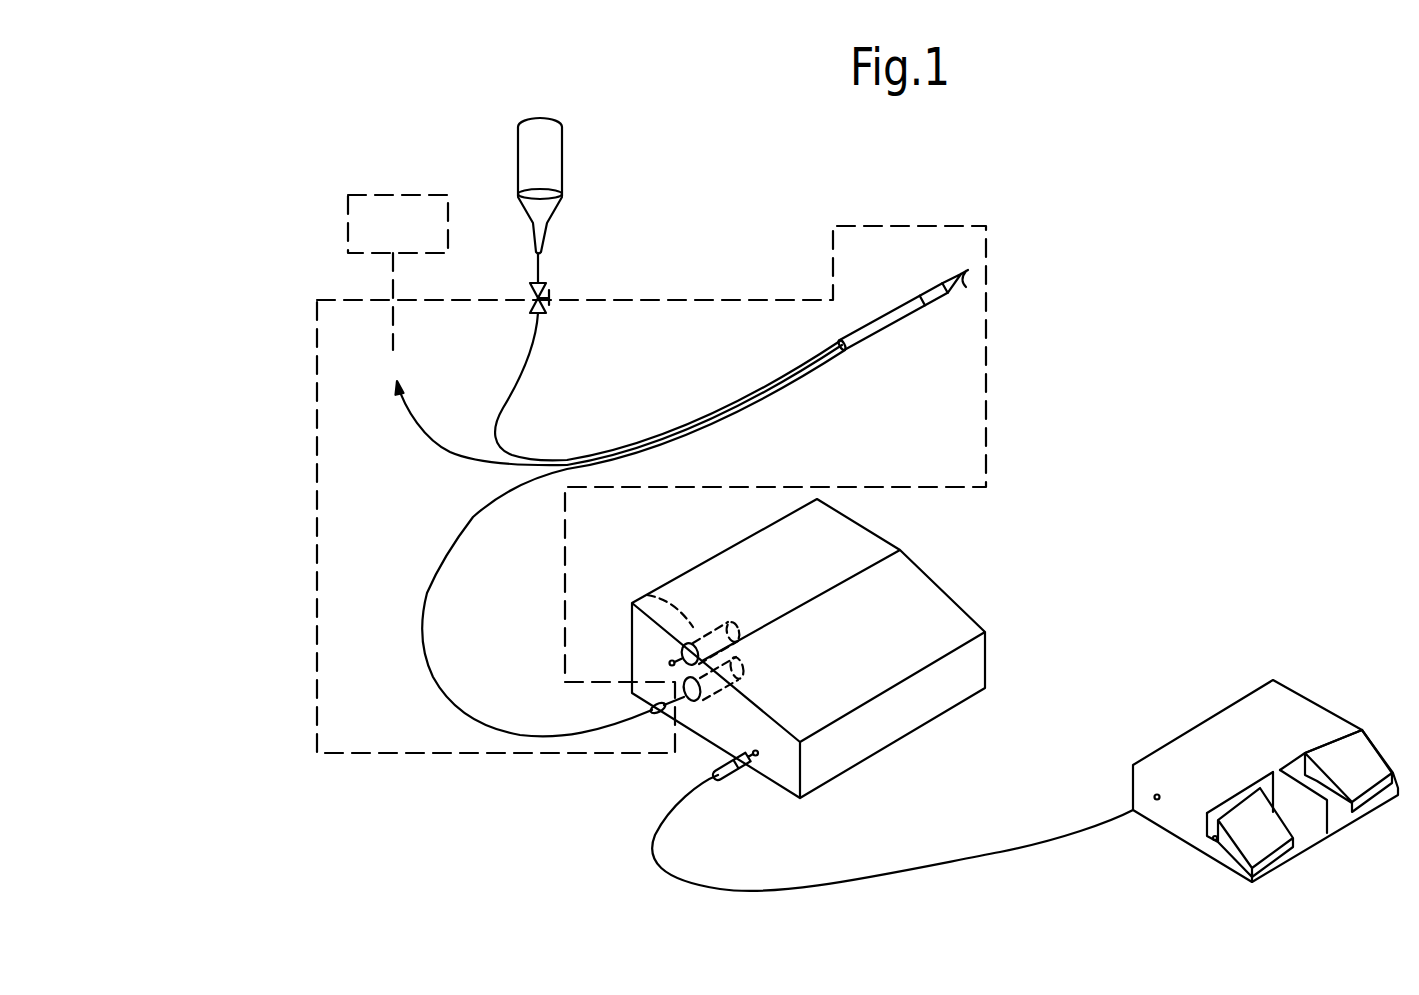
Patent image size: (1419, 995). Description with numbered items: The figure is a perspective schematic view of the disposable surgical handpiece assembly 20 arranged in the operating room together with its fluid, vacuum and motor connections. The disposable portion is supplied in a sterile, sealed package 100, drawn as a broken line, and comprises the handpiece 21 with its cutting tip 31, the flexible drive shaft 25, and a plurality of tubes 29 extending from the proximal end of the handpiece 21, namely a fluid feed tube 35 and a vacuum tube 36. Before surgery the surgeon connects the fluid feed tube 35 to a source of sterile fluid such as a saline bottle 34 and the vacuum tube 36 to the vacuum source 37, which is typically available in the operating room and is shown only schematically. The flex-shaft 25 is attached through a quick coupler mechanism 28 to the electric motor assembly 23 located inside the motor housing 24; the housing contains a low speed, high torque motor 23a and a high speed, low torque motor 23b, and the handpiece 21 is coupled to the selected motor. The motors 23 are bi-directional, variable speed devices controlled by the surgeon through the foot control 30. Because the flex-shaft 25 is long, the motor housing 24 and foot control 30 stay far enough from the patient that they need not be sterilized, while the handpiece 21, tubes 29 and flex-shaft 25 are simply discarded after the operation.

The sterile sealed package 100 is at (315, 555).
The vacuum source 37 is at (383, 192).
The saline bottle 34 is at (552, 140).
The fluid feed tube 35 is at (537, 337).
The vacuum tube 36 is at (428, 433).
The flexible drive shaft 25 is at (447, 543).
The plurality of tubes 29 is at (758, 382).
The surgical handpiece assembly 20 is at (883, 347).
The handpiece 21 is at (896, 307).
The cutting tip 31 is at (968, 283).
The motor housing 24 is at (927, 595).
The electric motor assembly 23 is at (711, 605).
The low speed high torque electrical motor 23a is at (645, 592).
The high speed low torque motor 23b is at (733, 662).
The quick coupler mechanism 28 is at (660, 713).
The foot control 30 is at (1302, 710).